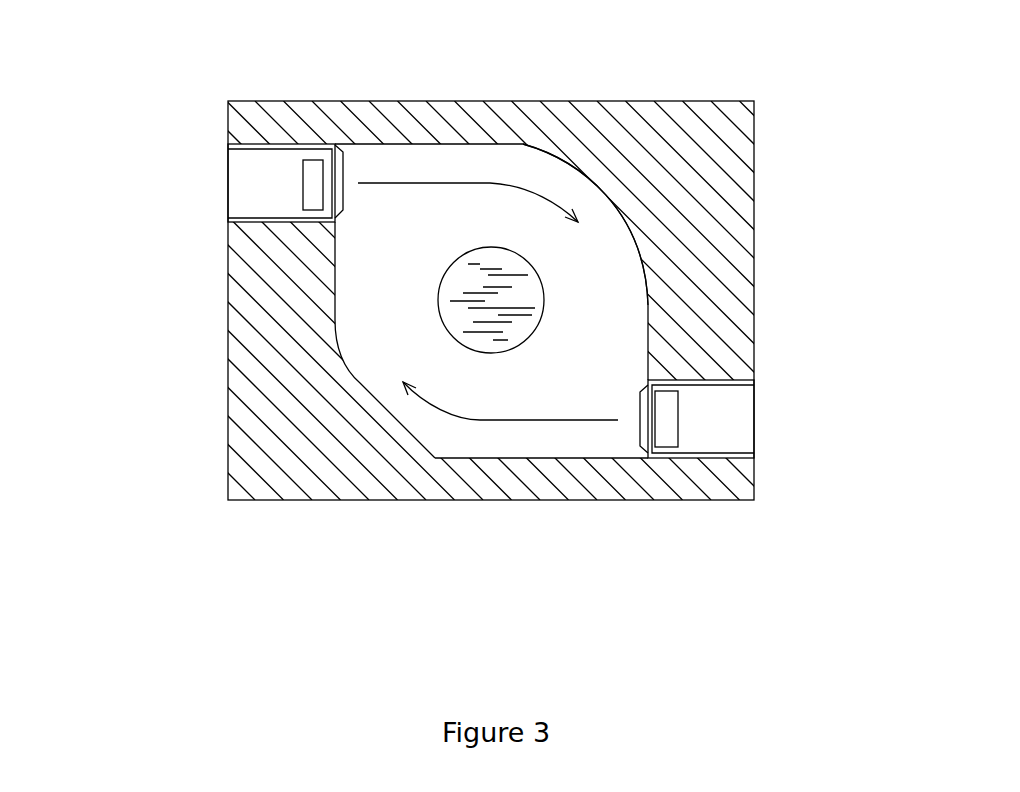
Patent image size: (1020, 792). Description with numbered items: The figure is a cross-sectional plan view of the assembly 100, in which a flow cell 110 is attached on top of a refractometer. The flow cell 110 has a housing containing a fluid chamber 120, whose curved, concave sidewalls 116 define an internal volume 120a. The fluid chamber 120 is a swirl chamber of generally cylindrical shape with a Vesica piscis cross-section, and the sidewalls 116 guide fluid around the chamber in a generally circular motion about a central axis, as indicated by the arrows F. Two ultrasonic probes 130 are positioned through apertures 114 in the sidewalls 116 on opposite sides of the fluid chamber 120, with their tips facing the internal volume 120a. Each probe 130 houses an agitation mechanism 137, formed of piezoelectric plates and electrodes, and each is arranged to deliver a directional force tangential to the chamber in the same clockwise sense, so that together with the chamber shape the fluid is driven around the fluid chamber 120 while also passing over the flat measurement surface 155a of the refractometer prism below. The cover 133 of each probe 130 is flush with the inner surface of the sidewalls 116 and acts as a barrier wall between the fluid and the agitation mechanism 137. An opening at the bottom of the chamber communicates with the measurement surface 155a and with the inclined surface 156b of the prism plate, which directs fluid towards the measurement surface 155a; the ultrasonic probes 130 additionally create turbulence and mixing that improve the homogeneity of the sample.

The assembly 100 is at (327, 87).
The flow cell 110 is at (755, 188).
The apertures 114 is at (280, 225).
The sidewalls 116 is at (335, 340).
The fluid chamber 120 is at (403, 278).
The internal volume 120a is at (595, 247).
The ultrasonic probes 130 is at (257, 202).
The cover 133 is at (338, 177).
The agitation mechanism 137 is at (317, 185).
The measurement surface 155a is at (520, 295).
The inclined surface 156b is at (517, 437).
The arrows F is at (552, 195).